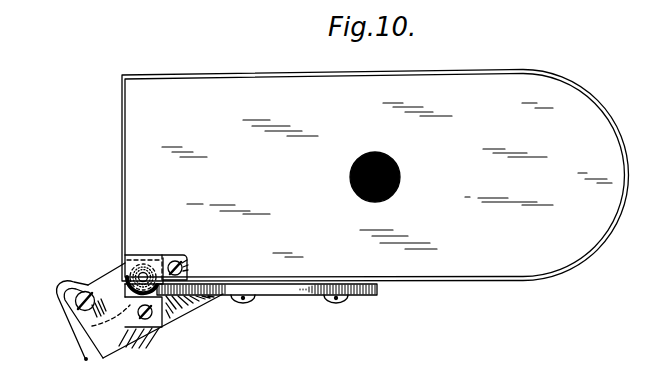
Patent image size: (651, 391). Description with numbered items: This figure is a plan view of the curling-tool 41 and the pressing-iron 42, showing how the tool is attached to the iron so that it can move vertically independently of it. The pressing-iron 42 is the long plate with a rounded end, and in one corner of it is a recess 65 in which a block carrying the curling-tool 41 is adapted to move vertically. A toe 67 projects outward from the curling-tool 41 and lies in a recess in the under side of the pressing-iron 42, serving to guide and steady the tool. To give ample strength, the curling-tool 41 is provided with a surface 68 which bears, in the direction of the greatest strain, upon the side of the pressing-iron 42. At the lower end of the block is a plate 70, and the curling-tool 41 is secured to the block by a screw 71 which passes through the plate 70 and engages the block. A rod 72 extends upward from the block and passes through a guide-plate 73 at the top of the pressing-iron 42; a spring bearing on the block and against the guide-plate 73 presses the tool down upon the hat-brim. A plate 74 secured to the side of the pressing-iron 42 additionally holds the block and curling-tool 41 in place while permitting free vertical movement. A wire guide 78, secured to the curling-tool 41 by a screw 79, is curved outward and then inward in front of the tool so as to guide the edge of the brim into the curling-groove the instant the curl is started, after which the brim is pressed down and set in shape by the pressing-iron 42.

The curling-tool 41 is at (113, 352).
The pressing-iron 42 is at (375, 176).
The recess 65 is at (123, 262).
The toe 67 is at (184, 247).
The surface 68 is at (206, 297).
The plate 70 is at (154, 328).
The screw 71 is at (164, 318).
The rod 72 is at (146, 266).
The guide-plate 73 is at (167, 258).
The plate 74 is at (307, 296).
The guide 78 is at (59, 313).
The screw 79 is at (83, 290).